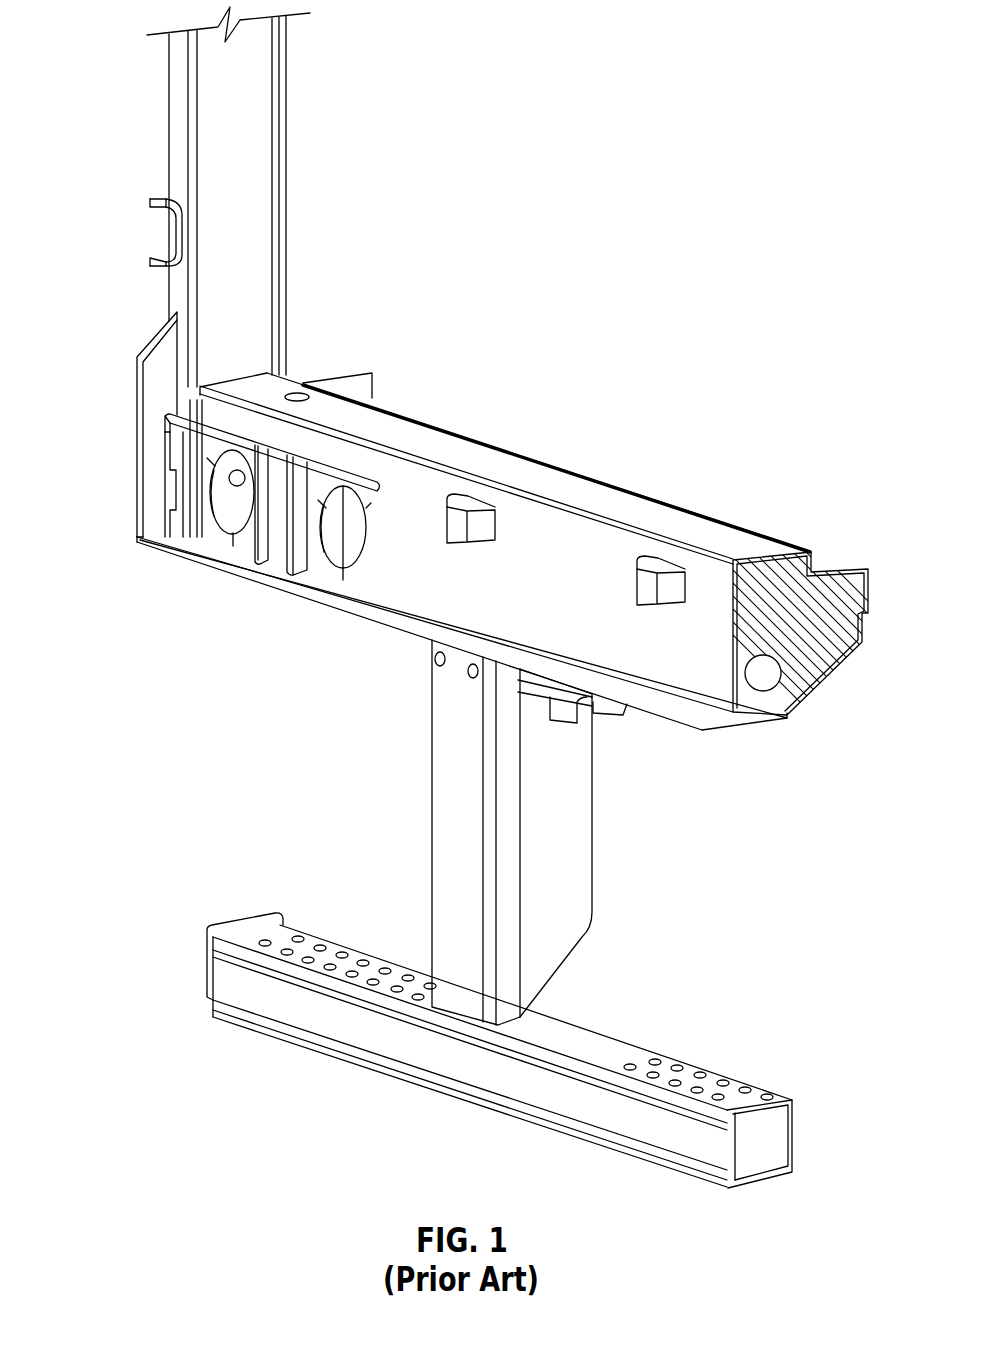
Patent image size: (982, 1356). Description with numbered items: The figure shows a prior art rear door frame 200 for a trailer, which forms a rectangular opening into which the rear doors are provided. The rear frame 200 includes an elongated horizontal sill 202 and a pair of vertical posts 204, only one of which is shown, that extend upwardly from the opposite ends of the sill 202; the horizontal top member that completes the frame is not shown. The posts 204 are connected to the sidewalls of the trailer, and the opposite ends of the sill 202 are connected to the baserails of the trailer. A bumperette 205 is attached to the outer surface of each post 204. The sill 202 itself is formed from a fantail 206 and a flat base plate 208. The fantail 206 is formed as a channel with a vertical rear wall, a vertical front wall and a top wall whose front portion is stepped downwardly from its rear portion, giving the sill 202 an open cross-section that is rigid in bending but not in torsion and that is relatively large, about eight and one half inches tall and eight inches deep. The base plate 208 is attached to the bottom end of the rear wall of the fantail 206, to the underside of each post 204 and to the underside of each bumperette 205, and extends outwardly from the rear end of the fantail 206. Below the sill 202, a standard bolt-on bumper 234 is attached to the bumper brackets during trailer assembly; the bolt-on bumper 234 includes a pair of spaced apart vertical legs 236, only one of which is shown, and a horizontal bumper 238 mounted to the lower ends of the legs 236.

The rear door frame 200 is at (598, 362).
The horizontal sill 202 is at (395, 598).
The vertical post 204 is at (158, 110).
The bumperette 205 is at (126, 480).
The fantail 206 is at (730, 532).
The base plate 208 is at (738, 730).
The bolt-on bumper 234 is at (508, 1087).
The vertical leg 236 is at (590, 890).
The horizontal bumper 238 is at (704, 1098).